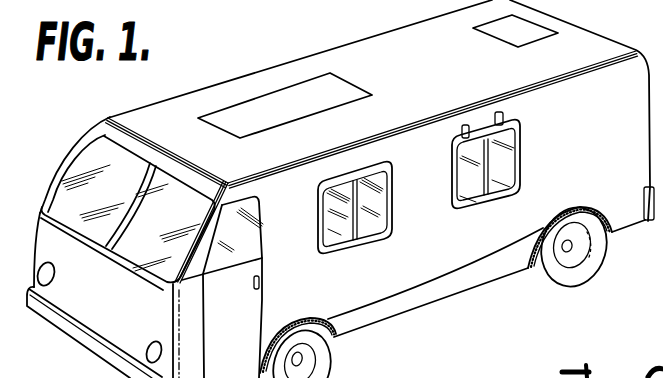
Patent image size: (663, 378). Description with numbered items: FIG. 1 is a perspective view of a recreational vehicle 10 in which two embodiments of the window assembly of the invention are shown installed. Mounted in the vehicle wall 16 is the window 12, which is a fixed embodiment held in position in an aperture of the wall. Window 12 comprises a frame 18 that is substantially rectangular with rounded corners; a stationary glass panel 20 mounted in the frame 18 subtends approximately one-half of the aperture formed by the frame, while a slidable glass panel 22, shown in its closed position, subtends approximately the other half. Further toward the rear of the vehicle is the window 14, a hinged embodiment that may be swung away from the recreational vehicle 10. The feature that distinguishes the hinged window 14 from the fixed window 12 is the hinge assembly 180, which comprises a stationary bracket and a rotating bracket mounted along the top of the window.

The recreational vehicle 10 is at (337, 35).
The window 12 is at (369, 246).
The window 14 is at (531, 153).
The vehicle wall 16 is at (413, 255).
The frame 18 is at (496, 102).
The hinge assembly 180 is at (494, 114).
The stationary glass panel 20 is at (332, 215).
The slidable glass panel 22 is at (381, 185).